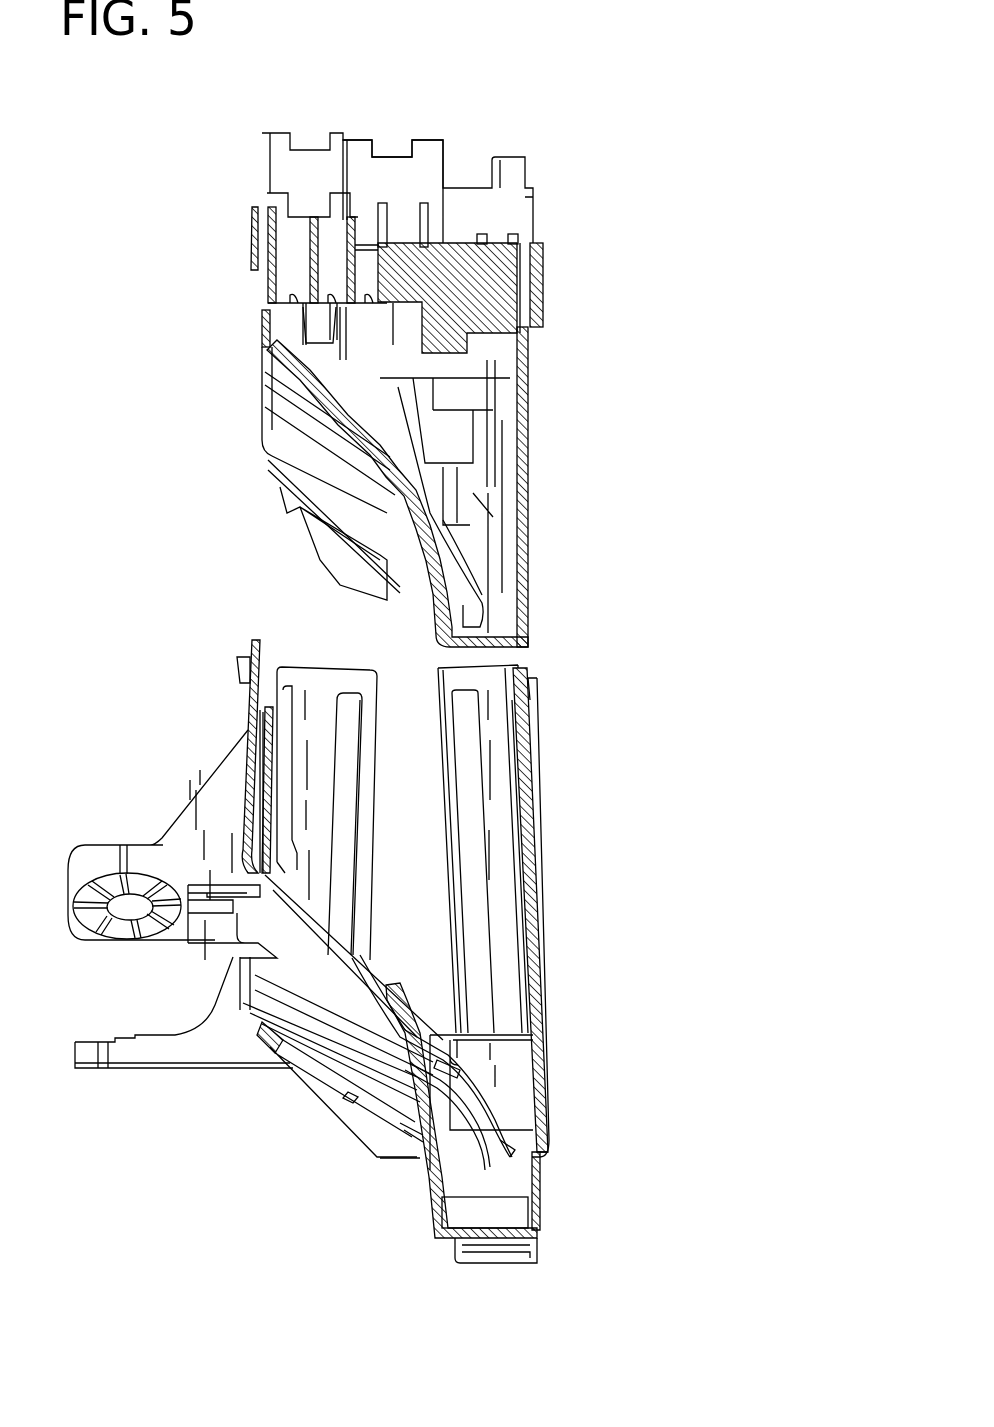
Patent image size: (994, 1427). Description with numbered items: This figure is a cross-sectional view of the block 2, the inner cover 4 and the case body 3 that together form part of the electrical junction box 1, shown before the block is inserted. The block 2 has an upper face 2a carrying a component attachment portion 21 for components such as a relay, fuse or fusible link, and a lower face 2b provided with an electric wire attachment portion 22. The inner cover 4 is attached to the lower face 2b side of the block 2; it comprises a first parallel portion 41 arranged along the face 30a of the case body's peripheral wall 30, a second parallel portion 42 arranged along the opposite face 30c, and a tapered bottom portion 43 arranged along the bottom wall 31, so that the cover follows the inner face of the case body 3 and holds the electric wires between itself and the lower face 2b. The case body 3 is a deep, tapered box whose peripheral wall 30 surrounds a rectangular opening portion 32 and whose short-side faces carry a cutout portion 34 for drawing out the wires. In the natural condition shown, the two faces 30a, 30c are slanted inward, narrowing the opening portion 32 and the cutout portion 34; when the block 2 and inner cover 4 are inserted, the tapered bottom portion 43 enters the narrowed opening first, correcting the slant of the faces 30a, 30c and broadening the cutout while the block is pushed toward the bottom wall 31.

The electrical junction box 1 is at (663, 118).
The block 2 is at (533, 190).
The upper face 2a is at (412, 140).
The lower face 2b is at (393, 307).
The component attachment portion 21 is at (307, 213).
The electric wire attachment portion 22 is at (295, 270).
The case body 3 is at (556, 1045).
The peripheral wall 30 is at (250, 702).
The face 30a is at (248, 737).
The face 30c is at (532, 752).
The bottom wall 31 is at (495, 1234).
The opening portion 32 is at (313, 690).
The cutout portion 34 is at (383, 705).
The inner cover 4 is at (540, 445).
The first parallel portion 41 is at (268, 332).
The second parallel portion 42 is at (530, 348).
The bottom portion 43 is at (313, 437).